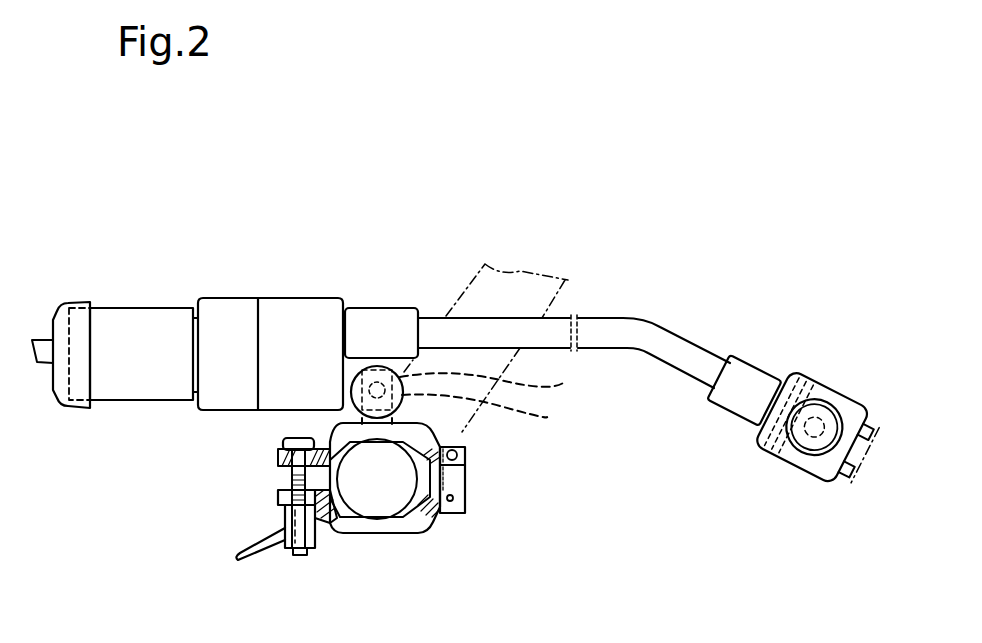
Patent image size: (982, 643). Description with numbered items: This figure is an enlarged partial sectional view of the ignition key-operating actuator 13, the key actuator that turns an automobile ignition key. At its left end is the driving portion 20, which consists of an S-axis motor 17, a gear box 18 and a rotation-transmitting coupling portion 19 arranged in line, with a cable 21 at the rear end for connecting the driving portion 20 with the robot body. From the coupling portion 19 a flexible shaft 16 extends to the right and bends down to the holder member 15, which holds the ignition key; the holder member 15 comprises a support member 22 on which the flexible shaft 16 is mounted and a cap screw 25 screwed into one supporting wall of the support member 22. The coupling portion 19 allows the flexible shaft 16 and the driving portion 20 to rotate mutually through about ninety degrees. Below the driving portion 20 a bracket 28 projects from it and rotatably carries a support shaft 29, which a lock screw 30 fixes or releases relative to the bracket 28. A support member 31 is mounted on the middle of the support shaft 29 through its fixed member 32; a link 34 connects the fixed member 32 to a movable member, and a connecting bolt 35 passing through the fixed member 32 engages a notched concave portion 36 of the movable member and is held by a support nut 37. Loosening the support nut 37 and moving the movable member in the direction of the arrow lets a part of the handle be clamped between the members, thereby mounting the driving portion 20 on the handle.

The ignition key-operating actuator 13 is at (603, 307).
The holder member 15 is at (803, 376).
The flexible shaft 16 is at (658, 325).
The S-axis motor 17 is at (163, 327).
The gear box 18 is at (232, 315).
The rotation-transmitting coupling portion 19 is at (287, 308).
The driving portion 20 is at (335, 248).
The cable 21 is at (43, 366).
The support member 22 is at (773, 445).
The cap screw 25 is at (813, 443).
The bracket 28 is at (355, 366).
The support shaft 29 is at (504, 379).
The lock screw 30 is at (492, 413).
The support member 31 is at (270, 448).
The fixed member 32 is at (458, 433).
The link 34 is at (463, 478).
The connecting bolt 35 is at (292, 473).
The notched concave portion 36 is at (280, 498).
The support nut 37 is at (280, 543).